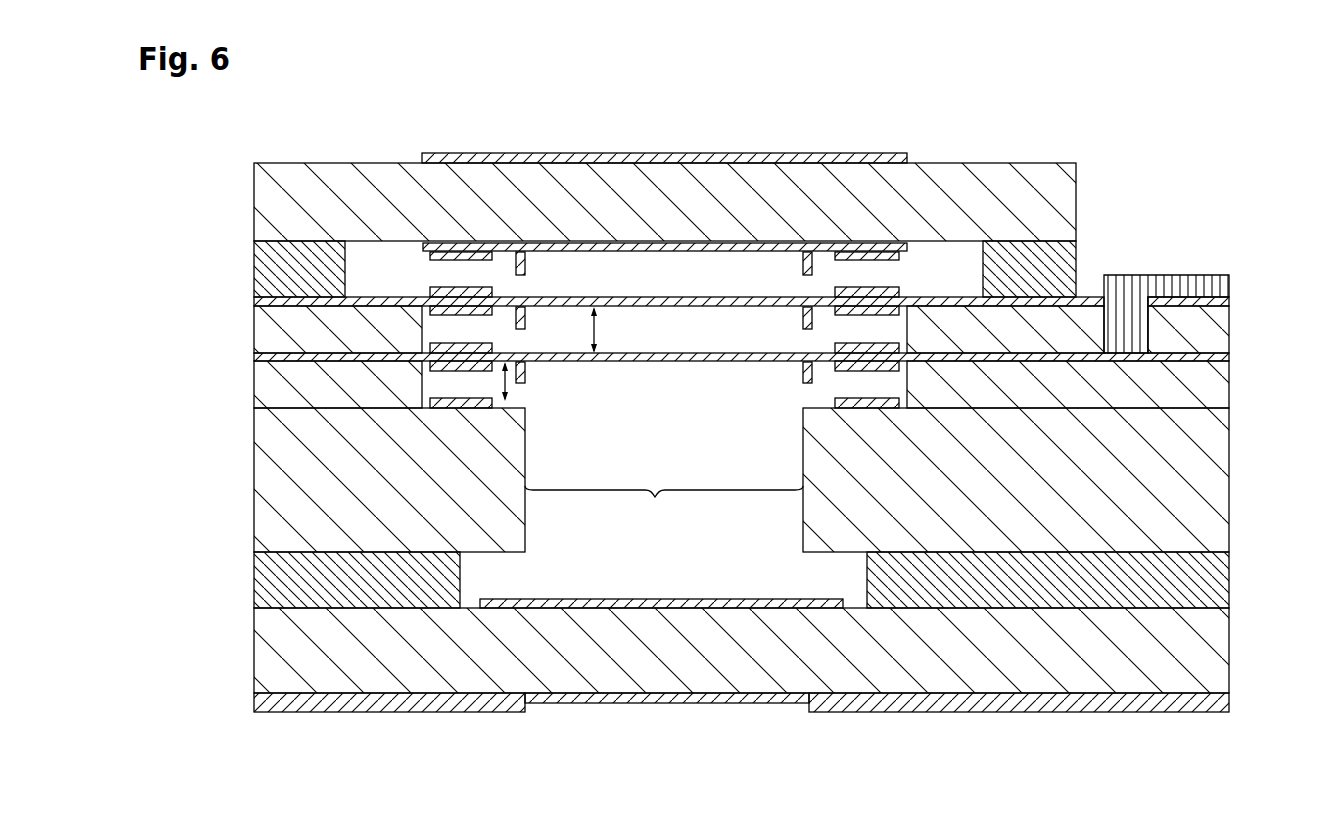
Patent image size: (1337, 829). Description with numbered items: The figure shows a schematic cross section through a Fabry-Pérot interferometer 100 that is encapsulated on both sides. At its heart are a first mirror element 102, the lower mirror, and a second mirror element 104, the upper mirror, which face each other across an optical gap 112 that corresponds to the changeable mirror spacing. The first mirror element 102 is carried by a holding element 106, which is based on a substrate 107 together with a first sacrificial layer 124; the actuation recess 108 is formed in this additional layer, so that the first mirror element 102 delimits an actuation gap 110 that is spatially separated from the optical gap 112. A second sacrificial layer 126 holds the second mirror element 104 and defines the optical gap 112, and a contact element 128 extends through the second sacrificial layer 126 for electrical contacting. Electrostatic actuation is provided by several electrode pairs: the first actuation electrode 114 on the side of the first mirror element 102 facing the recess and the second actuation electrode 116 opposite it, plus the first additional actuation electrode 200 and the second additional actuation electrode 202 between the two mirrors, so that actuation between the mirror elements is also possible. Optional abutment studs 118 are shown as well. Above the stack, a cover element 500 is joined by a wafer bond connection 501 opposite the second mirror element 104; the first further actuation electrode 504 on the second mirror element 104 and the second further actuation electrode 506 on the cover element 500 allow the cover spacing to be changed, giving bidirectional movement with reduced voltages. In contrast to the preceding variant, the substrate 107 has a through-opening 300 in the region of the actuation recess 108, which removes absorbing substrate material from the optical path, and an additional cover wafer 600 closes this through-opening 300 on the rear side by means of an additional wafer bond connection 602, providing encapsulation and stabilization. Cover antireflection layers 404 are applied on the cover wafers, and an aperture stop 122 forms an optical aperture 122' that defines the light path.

The interferometer 100 is at (321, 124).
The first mirror element 102 is at (1217, 353).
The second mirror element 104 is at (275, 300).
The holding element 106 is at (178, 356).
The substrate 107 is at (275, 500).
The actuation recess 108 is at (895, 385).
The actuation gap 110 is at (507, 383).
The optical gap 112 is at (596, 327).
The first actuation electrode 114 is at (475, 365).
The second actuation electrode 116 is at (483, 342).
The abutment studs 118 is at (527, 377).
The aperture stop 122 is at (741, 739).
The optical aperture 122' is at (667, 739).
The first sacrificial layer 124 is at (275, 380).
The second sacrificial layer 126 is at (270, 330).
The contact element 128 is at (1203, 280).
The first additional actuation electrode 200 is at (483, 342).
The second additional actuation electrode 202 is at (460, 305).
The through-opening 300 is at (664, 512).
The cover antireflection layer 404 is at (655, 245).
The cover element 500 is at (270, 188).
The wafer bond connection 501 is at (273, 268).
The first further actuation electrode 504 is at (442, 290).
The second further actuation electrode 506 is at (472, 260).
The additional cover wafer 600 is at (268, 645).
The additional wafer bond connection 602 is at (270, 582).